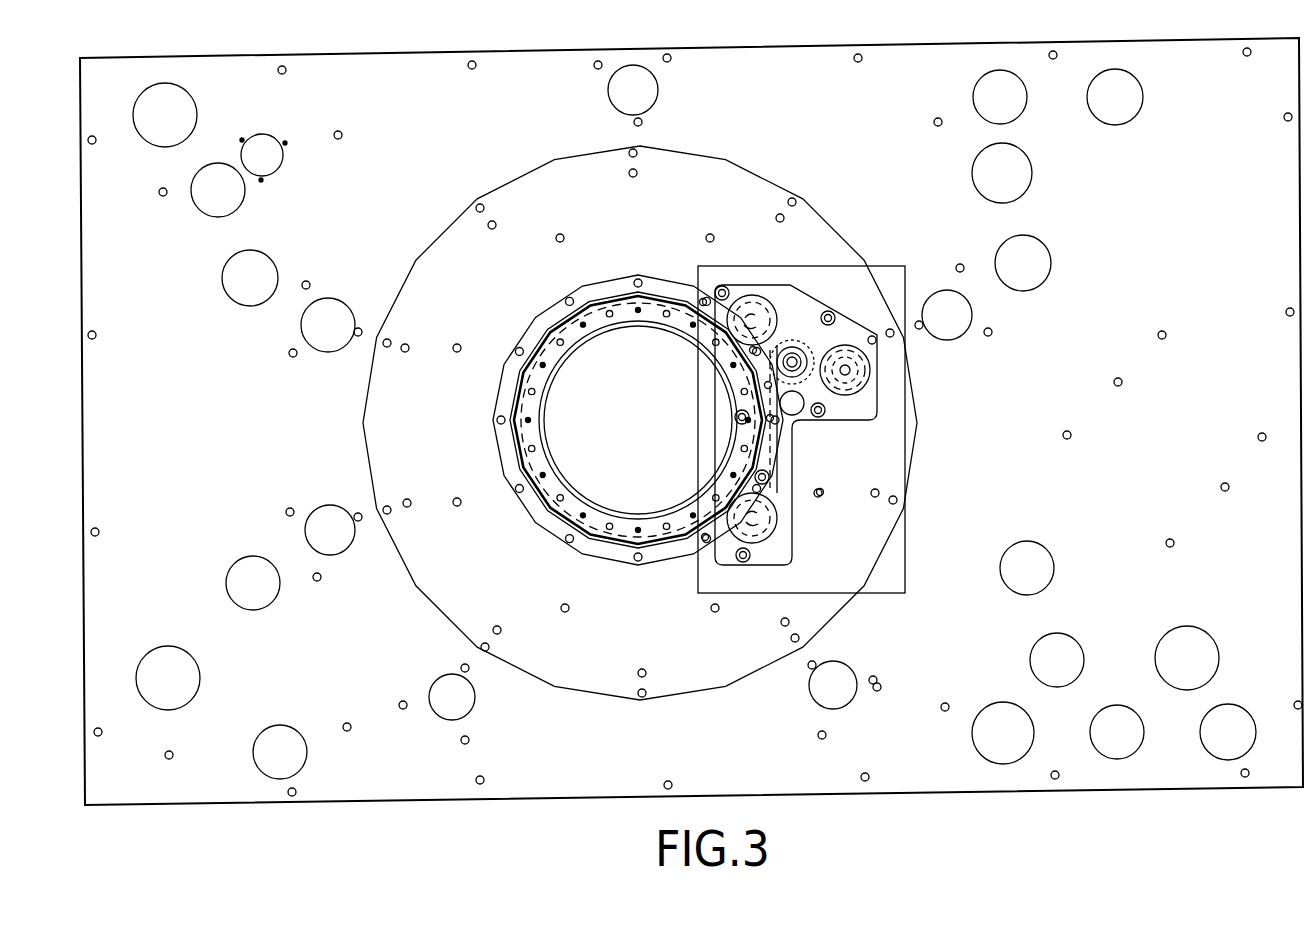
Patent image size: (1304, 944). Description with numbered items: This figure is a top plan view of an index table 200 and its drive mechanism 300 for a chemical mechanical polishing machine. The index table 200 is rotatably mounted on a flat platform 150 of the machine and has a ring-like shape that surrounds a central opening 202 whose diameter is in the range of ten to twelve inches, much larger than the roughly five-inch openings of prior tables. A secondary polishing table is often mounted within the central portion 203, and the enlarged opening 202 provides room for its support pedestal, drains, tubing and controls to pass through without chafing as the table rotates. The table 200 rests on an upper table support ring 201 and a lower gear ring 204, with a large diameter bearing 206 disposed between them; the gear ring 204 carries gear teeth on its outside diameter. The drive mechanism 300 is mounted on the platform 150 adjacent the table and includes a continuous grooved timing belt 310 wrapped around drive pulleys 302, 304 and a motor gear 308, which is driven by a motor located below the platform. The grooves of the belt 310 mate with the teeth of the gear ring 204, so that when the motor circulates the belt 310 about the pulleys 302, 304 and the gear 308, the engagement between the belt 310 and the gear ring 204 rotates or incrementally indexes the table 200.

The platform 150 is at (502, 90).
The index table 200 is at (695, 190).
The upper table support ring 201 is at (527, 408).
The central opening 202 is at (556, 470).
The central portion 203 is at (642, 444).
The lower gear ring 204 is at (550, 336).
The large diameter bearing 206 is at (606, 303).
The drive mechanism 300 is at (778, 548).
The drive pulley 302 is at (750, 314).
The drive pulley 304 is at (848, 372).
The motor gear 308 is at (793, 354).
The timing belt 310 is at (778, 470).